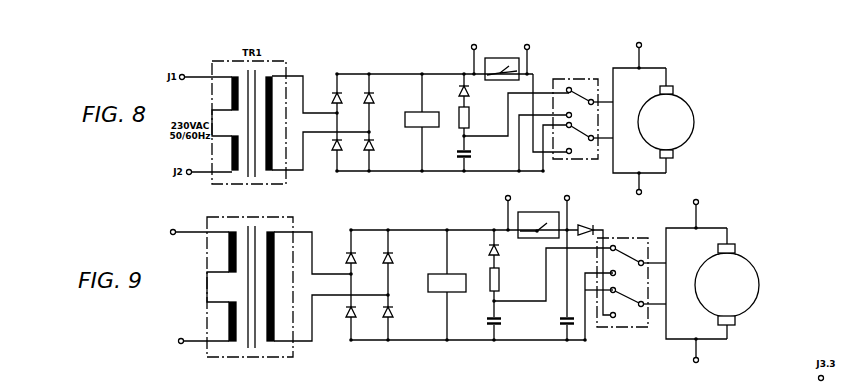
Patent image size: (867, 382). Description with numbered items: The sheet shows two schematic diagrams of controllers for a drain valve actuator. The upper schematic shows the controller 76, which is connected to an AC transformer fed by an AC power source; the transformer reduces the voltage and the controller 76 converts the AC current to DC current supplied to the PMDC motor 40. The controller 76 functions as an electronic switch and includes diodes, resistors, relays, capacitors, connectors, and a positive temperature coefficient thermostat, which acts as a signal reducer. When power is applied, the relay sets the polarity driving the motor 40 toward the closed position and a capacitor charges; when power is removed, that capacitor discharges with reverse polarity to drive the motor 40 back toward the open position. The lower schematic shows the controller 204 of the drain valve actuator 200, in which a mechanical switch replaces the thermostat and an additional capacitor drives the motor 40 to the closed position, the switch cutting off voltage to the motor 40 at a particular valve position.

In FIG. 8, the controller 76 is at (410, 47).
In FIG. 8, the motor 40 is at (697, 108).
In FIG. 9, the motor 40 is at (758, 277).
In FIG. 9, the controller 204 is at (438, 207).
In FIG. 9, the drain valve actuator 200 is at (502, 375).